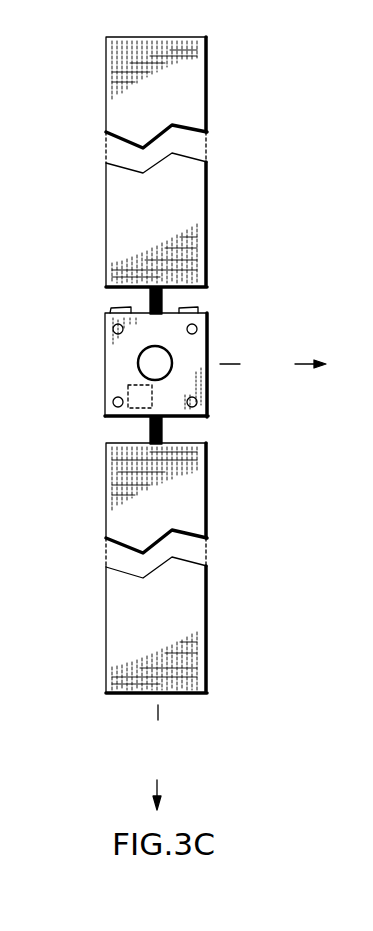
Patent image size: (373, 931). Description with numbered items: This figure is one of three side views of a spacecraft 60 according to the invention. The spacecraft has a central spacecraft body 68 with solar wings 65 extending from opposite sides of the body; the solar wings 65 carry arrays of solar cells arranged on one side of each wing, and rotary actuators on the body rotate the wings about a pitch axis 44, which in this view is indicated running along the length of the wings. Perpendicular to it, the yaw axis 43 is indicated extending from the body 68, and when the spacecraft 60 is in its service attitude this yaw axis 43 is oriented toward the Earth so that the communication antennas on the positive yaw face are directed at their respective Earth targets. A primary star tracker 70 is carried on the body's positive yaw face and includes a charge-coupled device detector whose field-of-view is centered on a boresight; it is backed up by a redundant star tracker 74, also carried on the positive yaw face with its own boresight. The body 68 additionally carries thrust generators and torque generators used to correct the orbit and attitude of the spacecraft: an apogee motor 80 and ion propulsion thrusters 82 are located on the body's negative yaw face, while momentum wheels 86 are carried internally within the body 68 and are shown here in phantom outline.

The spacecraft 60 is at (265, 264).
The solar wings 65 is at (208, 56).
The spacecraft body 68 is at (180, 400).
The primary star tracker 70 is at (197, 308).
The redundant star tracker 74 is at (112, 310).
The apogee motor 80 is at (155, 346).
The ion propulsion thrusters 82 is at (118, 396).
The momentum wheels 86 is at (140, 418).
The yaw axis 43 is at (273, 366).
The pitch axis 44 is at (159, 757).